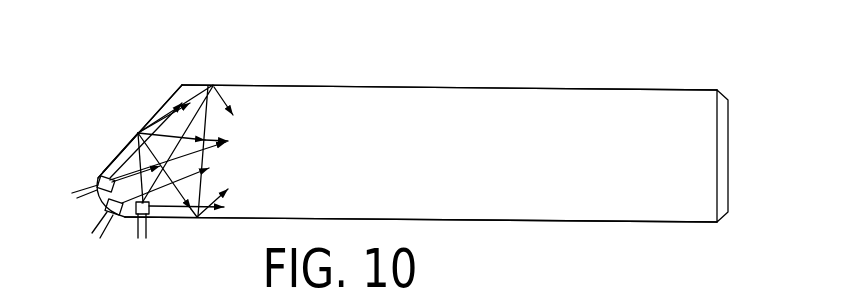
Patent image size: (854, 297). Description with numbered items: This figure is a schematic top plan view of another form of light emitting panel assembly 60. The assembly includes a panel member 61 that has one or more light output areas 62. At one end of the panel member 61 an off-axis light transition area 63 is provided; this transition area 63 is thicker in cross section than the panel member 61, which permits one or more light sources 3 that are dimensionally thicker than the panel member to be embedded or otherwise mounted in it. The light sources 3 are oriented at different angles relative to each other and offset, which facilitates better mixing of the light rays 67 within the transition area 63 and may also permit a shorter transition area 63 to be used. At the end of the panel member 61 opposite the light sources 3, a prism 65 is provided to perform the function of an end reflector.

The light source 3 is at (105, 177).
The light emitting panel assembly 60 is at (512, 80).
The panel member 61 is at (665, 105).
The light output area 62 is at (421, 180).
The light transition area 63 is at (152, 101).
The prism 65 is at (729, 142).
The light rays 67 is at (202, 84).